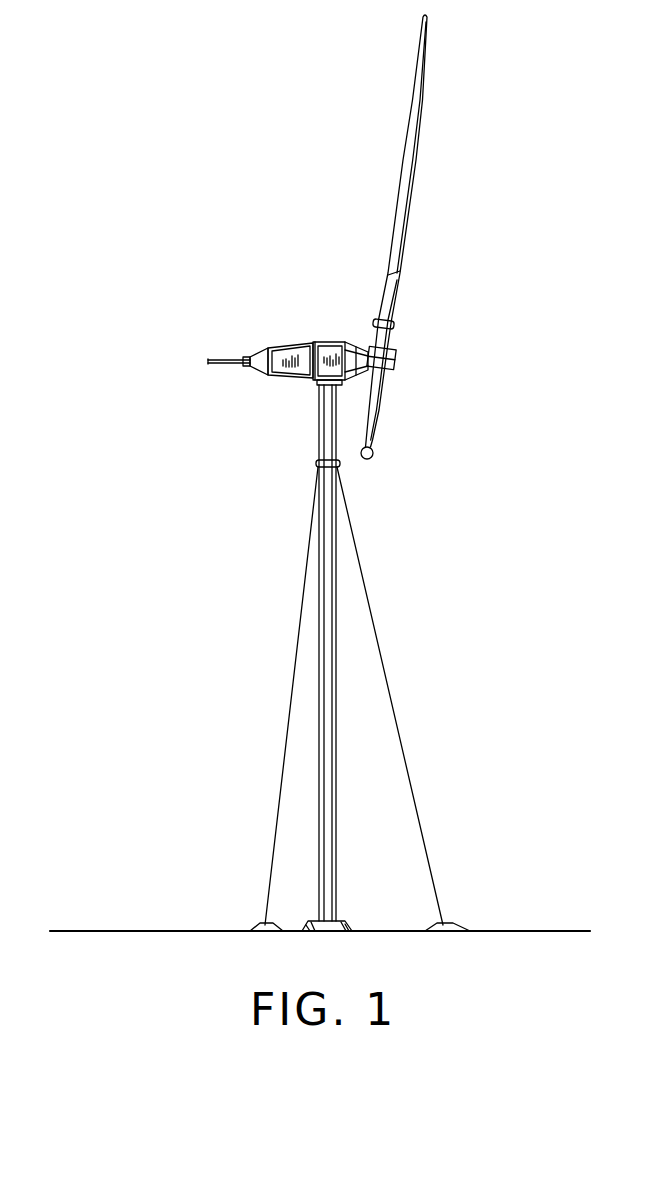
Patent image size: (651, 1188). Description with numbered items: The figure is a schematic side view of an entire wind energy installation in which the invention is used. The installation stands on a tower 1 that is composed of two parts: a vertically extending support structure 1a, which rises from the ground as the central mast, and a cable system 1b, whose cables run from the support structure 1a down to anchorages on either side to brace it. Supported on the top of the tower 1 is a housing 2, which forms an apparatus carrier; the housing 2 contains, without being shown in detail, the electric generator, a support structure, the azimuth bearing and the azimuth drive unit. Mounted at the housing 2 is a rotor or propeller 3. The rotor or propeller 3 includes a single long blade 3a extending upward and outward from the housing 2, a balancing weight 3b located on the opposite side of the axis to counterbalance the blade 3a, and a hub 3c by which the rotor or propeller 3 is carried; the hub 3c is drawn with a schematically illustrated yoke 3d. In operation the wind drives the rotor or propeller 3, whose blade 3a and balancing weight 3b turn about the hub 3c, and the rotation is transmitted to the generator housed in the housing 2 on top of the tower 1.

The tower 1 is at (337, 819).
The support structure 1a is at (337, 747).
The cable system 1b is at (414, 789).
The housing 2 is at (299, 334).
The rotor or propeller 3 is at (417, 243).
The blade 3a is at (413, 162).
The balancing weight 3b is at (374, 455).
The hub 3c is at (393, 348).
The yoke 3d is at (396, 361).